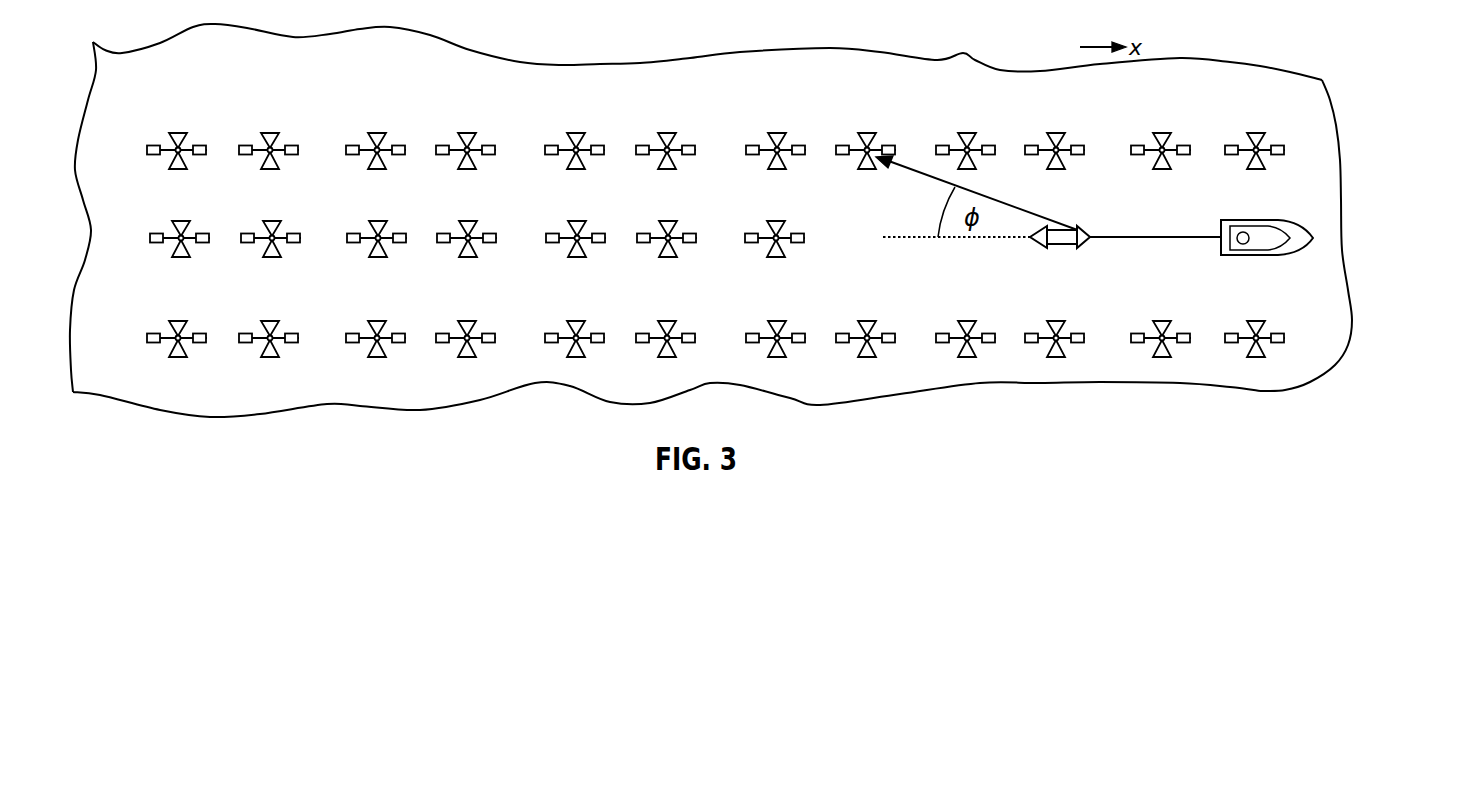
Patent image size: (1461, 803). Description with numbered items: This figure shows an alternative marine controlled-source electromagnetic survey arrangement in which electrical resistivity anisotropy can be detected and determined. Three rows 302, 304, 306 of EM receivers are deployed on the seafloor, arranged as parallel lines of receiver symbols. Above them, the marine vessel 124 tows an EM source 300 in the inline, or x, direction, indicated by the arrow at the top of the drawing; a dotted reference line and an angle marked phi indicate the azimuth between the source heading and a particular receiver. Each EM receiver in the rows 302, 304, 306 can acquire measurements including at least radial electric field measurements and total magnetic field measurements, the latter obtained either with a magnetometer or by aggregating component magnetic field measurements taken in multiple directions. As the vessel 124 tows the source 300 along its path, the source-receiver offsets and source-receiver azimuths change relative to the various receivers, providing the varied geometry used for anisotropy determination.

The row of EM receivers 302 is at (1320, 146).
The row of EM receivers 304 is at (826, 248).
The row of EM receivers 306 is at (1320, 326).
The EM source 300 is at (1102, 226).
The marine vessel 124 is at (1308, 232).